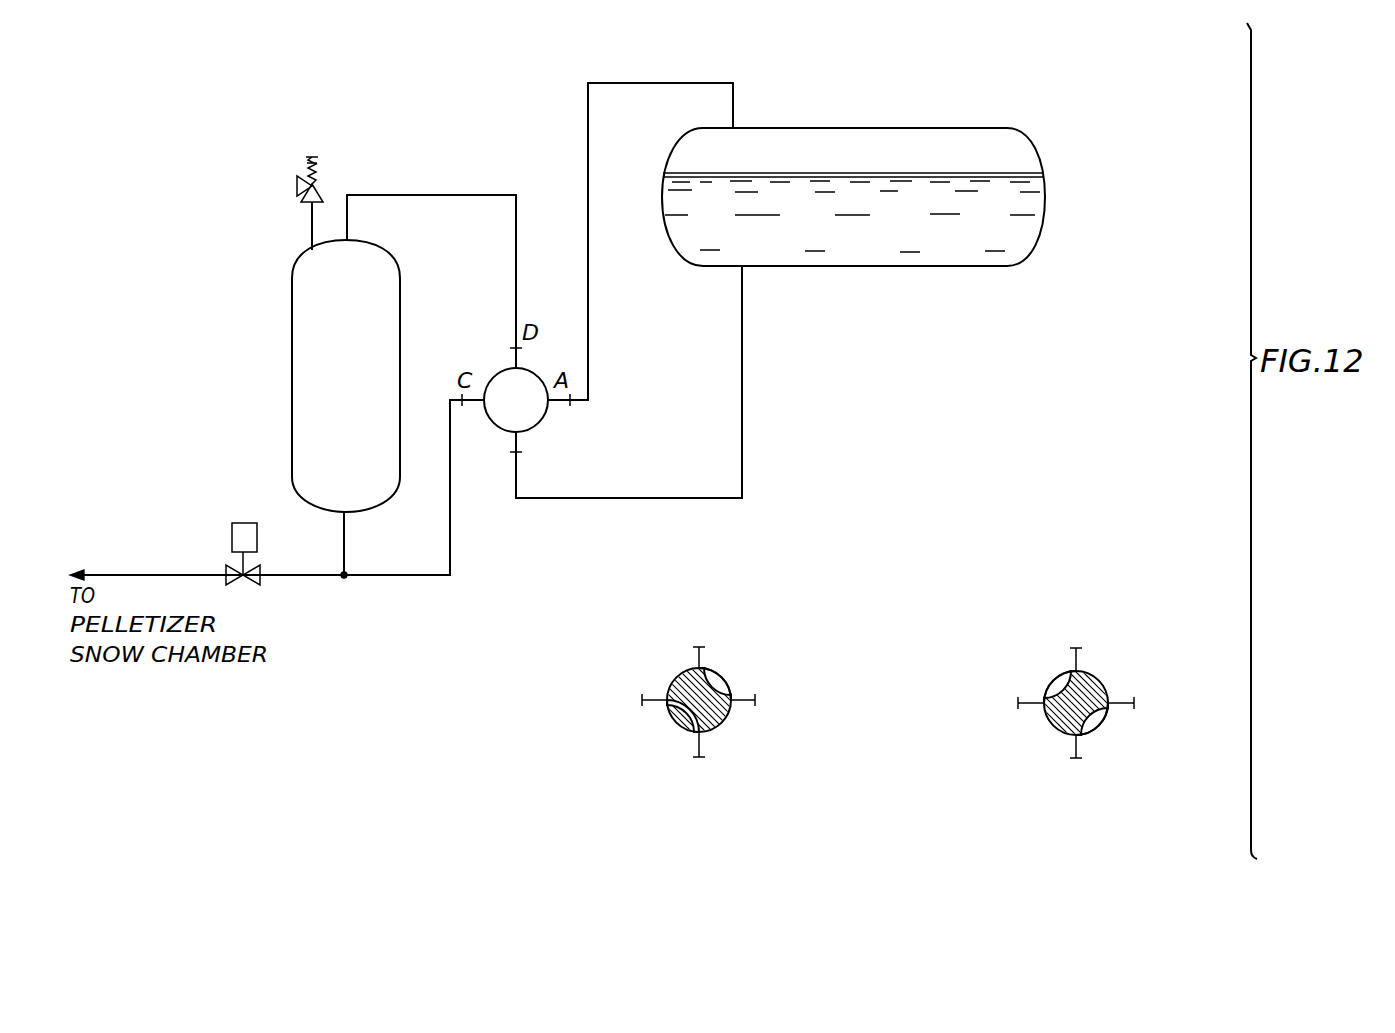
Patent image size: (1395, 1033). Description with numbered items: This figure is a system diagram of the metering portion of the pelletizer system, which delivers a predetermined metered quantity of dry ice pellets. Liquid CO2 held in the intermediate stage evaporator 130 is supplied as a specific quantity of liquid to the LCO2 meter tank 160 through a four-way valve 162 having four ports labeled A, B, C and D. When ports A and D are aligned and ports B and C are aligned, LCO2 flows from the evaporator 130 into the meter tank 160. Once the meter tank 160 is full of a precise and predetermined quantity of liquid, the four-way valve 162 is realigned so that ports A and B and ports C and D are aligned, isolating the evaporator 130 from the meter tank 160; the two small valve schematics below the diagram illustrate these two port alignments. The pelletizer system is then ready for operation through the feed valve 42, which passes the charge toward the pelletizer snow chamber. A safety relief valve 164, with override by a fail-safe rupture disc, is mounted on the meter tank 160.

The feed valve 42 is at (240, 565).
The intermediate stage evaporator 130 is at (1042, 150).
The LCO2 meter tank 160 is at (292, 352).
The 4-way valve 162 is at (544, 423).
The safety relief valve 164 is at (297, 186).